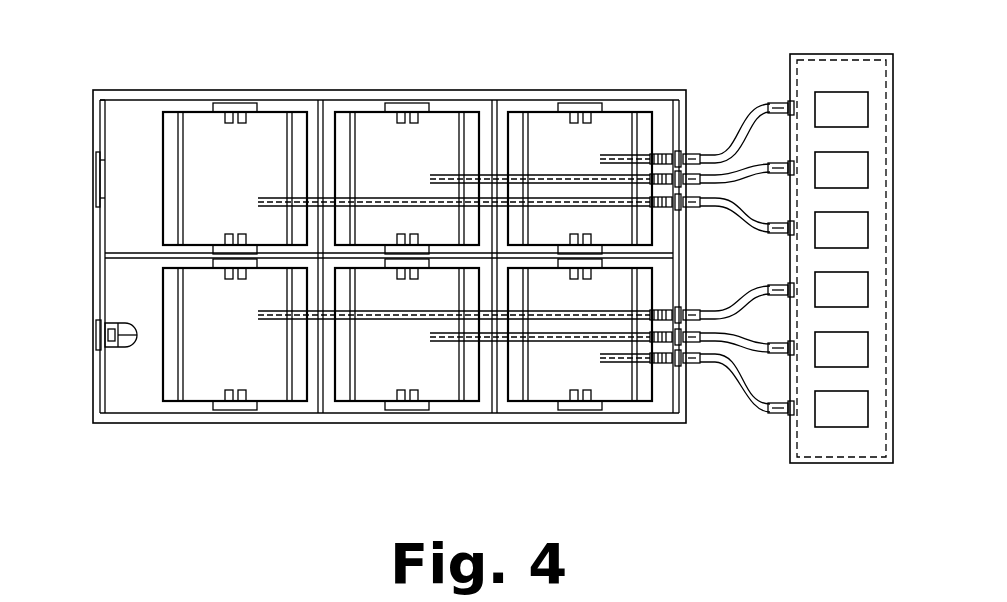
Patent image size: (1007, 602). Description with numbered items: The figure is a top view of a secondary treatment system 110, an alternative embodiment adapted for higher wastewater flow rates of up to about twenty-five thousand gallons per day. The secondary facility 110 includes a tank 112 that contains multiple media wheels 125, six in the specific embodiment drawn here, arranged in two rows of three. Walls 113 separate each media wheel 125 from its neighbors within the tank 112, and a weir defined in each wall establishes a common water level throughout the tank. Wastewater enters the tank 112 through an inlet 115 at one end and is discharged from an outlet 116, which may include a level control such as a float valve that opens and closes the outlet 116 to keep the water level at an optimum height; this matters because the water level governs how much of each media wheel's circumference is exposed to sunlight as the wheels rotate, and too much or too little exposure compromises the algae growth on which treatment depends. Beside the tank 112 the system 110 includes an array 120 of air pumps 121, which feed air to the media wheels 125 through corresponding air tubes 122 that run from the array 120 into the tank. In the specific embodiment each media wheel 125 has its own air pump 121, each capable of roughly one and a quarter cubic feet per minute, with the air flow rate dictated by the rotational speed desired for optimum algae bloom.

The secondary treatment system 110 is at (480, 82).
The tank 112 is at (278, 98).
The walls 113 is at (333, 98).
The inlet 115 is at (95, 178).
The outlet 116 is at (97, 333).
The array of air pumps 120 is at (895, 465).
The air pump 121 is at (850, 355).
The air tubes 122 is at (748, 305).
The media wheels 125 is at (153, 108).